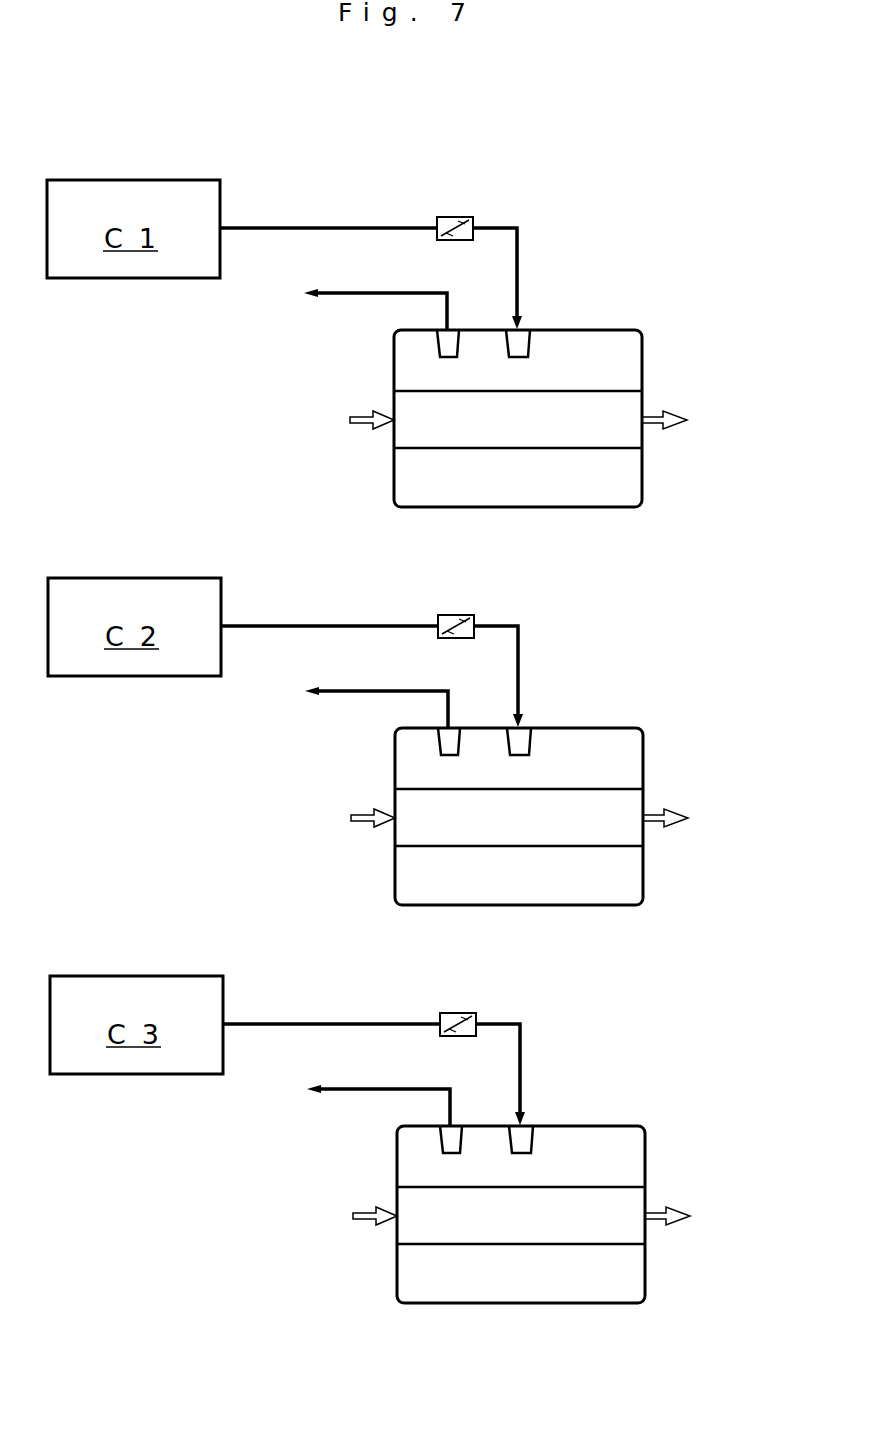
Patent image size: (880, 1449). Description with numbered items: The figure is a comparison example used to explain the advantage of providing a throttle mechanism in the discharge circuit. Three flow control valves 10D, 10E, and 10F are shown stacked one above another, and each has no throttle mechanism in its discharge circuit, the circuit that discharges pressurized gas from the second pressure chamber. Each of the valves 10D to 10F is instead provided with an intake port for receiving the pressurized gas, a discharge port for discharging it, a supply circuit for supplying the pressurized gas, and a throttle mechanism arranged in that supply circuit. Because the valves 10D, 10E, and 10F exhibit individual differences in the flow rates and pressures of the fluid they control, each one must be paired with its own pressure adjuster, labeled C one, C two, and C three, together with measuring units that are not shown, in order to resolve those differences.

The flow control valve 10D is at (643, 328).
The flow control valve 10E is at (568, 726).
The flow control valve 10F is at (570, 1124).